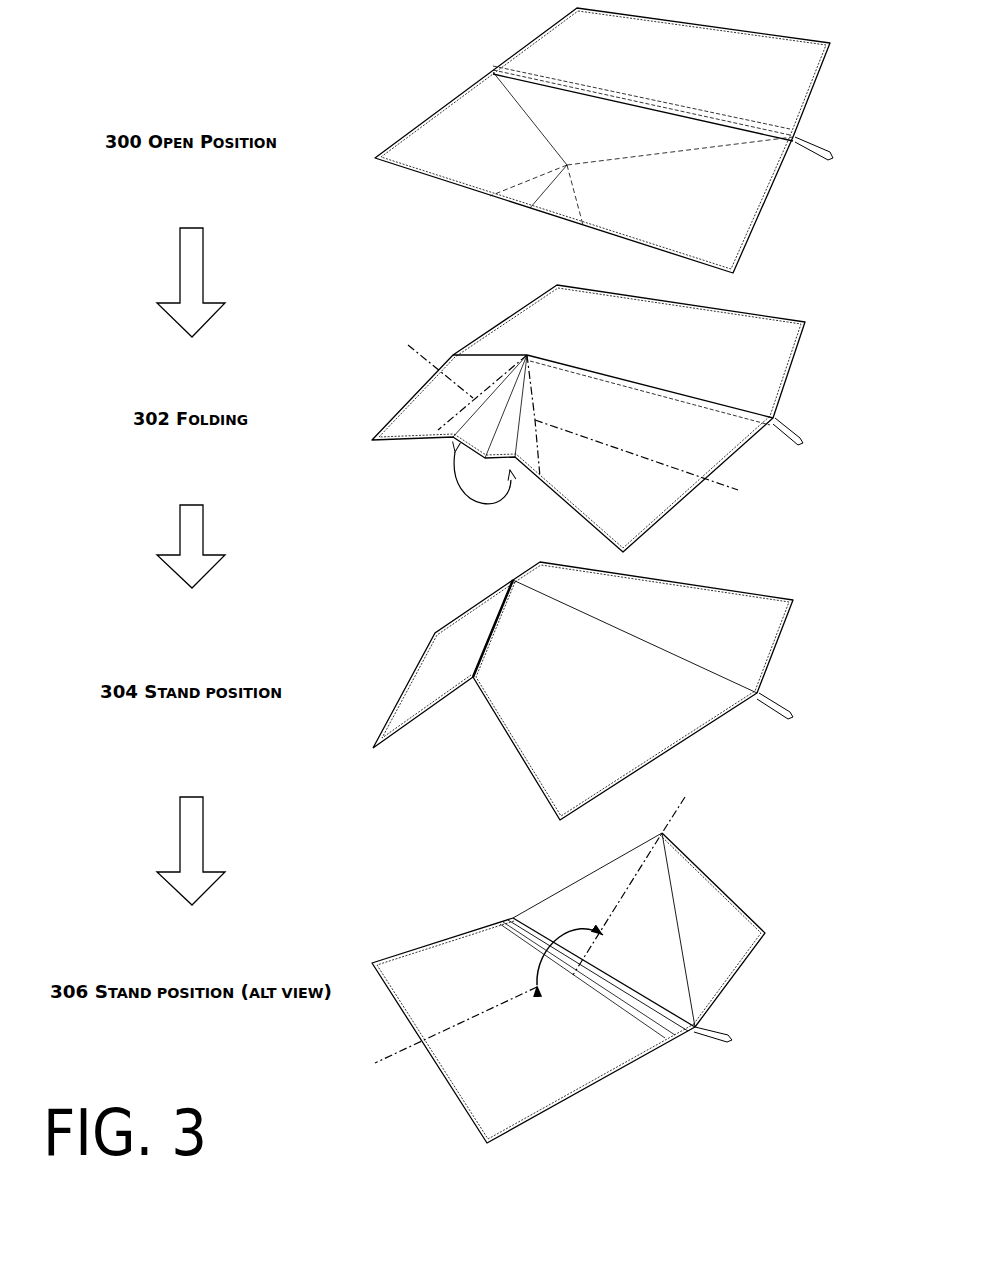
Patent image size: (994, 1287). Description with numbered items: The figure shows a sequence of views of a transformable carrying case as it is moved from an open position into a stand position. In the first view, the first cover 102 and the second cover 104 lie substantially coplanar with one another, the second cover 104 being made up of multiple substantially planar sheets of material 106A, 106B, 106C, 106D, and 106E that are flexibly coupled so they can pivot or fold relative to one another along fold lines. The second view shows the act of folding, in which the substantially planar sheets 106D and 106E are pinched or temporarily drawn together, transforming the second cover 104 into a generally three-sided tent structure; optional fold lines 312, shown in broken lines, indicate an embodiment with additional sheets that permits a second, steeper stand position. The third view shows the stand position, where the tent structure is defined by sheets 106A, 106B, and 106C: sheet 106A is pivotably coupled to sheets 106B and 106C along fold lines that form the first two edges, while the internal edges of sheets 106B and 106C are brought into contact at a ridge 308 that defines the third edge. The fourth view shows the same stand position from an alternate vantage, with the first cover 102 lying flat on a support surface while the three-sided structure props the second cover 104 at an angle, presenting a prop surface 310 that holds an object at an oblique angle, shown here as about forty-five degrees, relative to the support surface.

The first cover 102 is at (535, 40).
The second cover 104 is at (433, 110).
The substantially planar sheet of material 106A is at (643, 103).
The substantially planar sheet of material 106B is at (680, 177).
The substantially planar sheet of material 106C is at (515, 118).
The substantially planar sheet of material 106D is at (520, 193).
The substantially planar sheet of material 106E is at (560, 208).
The ridge 308 is at (483, 650).
The prop surface 310 is at (598, 902).
The optional fold lines 312 is at (572, 417).